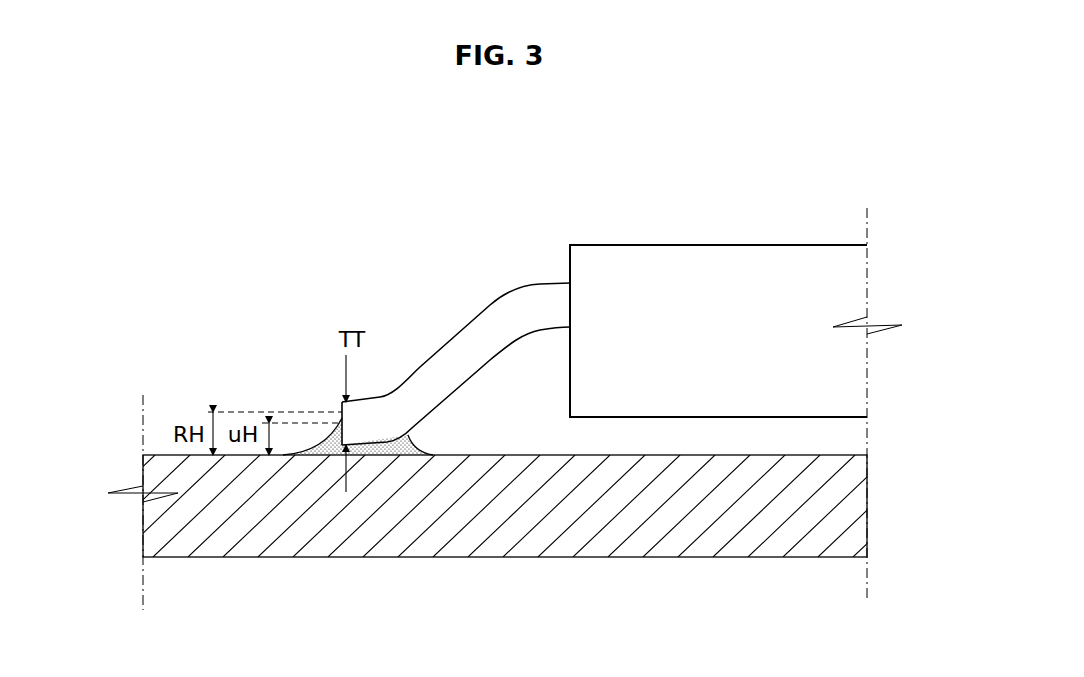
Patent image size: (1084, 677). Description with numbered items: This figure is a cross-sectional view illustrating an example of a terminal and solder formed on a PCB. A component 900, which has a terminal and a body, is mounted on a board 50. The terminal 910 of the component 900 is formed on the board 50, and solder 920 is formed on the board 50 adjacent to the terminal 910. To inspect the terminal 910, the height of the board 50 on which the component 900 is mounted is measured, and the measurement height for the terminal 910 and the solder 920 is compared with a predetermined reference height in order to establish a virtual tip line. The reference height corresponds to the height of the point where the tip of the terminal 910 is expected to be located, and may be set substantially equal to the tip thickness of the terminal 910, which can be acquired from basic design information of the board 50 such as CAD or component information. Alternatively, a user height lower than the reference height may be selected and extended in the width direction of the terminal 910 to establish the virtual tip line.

The board 50 is at (240, 522).
The component 900 is at (549, 143).
The terminal 910 is at (463, 338).
The solder 920 is at (393, 448).